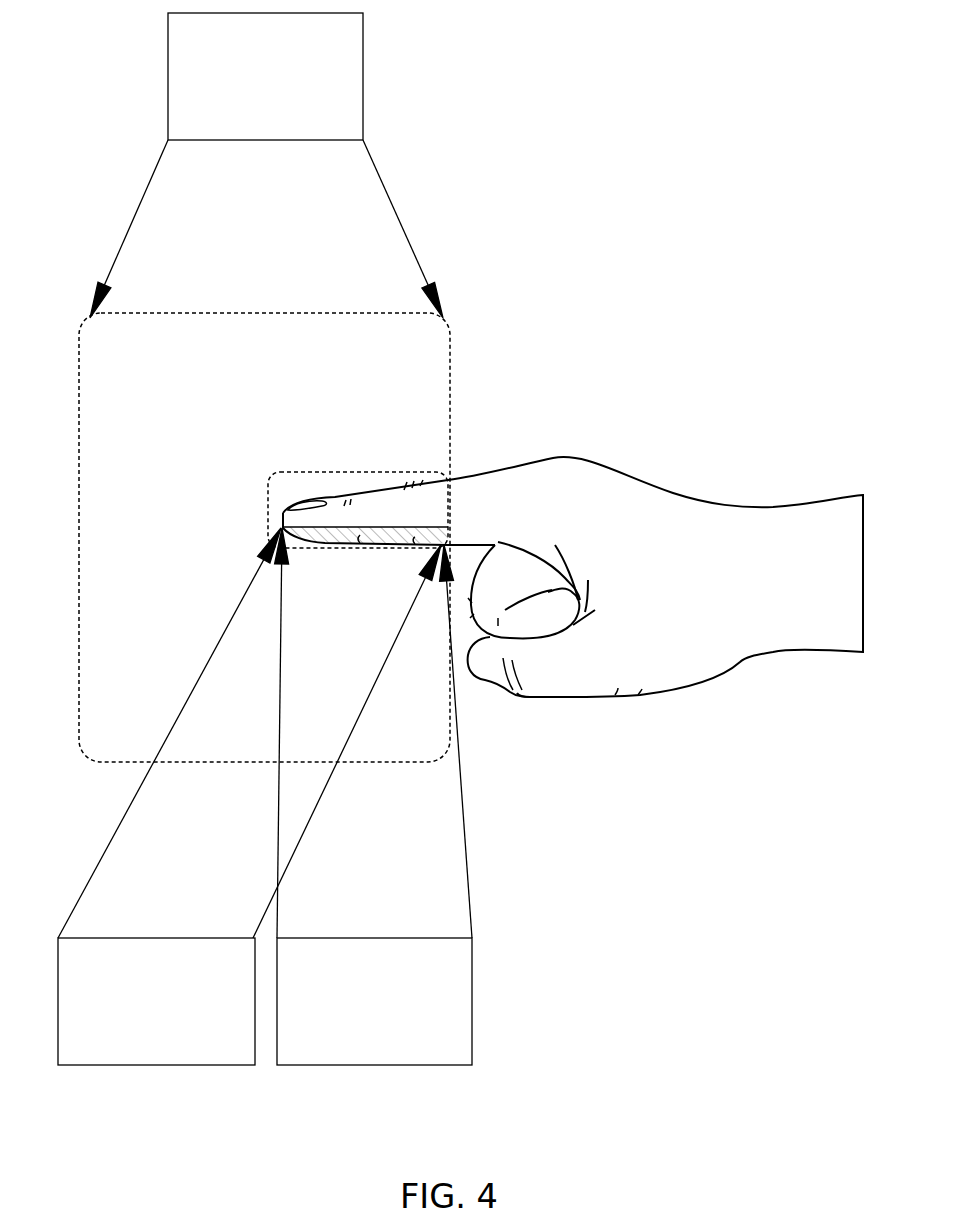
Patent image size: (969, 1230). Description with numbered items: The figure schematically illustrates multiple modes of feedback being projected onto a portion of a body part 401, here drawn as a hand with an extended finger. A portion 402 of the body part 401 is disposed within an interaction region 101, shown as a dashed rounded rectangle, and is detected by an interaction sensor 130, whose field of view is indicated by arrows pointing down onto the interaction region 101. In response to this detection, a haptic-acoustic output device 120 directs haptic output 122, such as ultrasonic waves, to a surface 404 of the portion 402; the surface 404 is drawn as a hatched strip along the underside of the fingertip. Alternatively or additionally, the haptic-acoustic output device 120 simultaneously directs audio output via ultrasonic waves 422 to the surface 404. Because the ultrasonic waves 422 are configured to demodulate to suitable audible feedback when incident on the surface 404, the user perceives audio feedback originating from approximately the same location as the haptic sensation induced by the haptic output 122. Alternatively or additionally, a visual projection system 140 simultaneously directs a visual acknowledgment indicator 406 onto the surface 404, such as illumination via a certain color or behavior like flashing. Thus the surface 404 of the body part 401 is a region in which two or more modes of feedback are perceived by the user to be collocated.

The interaction sensor 130 is at (245, 118).
The interaction region 101 is at (79, 418).
The portion of body part 402 is at (310, 471).
The surface 404 is at (388, 543).
The body part 401 is at (695, 600).
The haptic output 122 is at (249, 733).
The ultrasonic waves 422 is at (185, 706).
The visual acknowledgment indicator 406 is at (462, 795).
The haptic-acoustic output device 120 is at (177, 1056).
The visual projection system 140 is at (354, 1056).